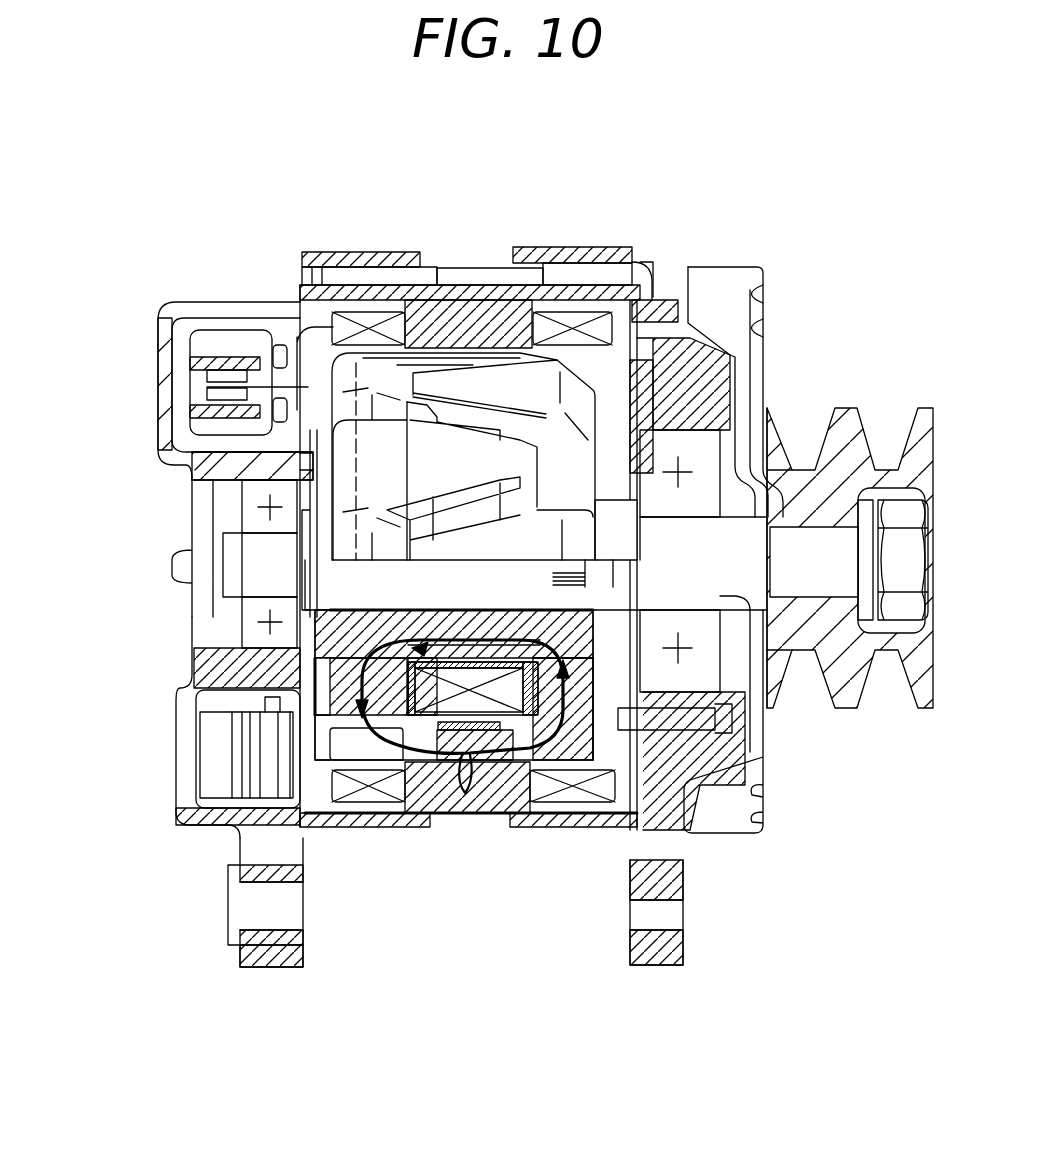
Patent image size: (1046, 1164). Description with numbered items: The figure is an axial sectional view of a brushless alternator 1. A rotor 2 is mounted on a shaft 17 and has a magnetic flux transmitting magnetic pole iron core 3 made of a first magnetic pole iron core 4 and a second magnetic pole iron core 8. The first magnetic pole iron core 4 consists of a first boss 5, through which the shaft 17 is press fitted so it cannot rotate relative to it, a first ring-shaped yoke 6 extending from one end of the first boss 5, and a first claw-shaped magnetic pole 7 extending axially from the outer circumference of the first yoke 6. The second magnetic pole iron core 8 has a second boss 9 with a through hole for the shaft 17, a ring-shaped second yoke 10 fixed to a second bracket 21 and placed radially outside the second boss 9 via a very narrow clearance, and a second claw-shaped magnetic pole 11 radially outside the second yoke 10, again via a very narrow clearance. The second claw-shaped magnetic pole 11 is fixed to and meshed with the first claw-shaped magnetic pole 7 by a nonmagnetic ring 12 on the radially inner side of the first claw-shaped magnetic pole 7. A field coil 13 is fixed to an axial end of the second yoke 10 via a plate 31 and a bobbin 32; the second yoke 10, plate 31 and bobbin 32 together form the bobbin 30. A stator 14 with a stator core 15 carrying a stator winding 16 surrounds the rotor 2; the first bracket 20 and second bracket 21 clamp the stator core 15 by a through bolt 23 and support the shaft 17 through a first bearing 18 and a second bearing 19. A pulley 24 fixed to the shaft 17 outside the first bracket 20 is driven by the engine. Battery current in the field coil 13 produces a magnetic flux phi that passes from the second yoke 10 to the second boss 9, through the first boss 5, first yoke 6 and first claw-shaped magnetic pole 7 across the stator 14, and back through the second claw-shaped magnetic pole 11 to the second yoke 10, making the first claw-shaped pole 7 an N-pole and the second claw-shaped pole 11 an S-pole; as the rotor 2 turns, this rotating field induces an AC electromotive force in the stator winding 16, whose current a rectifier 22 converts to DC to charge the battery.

The brushless alternator 1 is at (193, 190).
The rotor 2 is at (593, 363).
The magnetic flux transmitting magnetic pole iron core 3 is at (581, 960).
The first magnetic pole iron core 4 is at (608, 915).
The first boss 5 is at (540, 700).
The first ring-shaped yoke 6 is at (590, 690).
The first claw-shaped magnetic pole 7 is at (512, 730).
The second magnetic pole iron core 8 is at (446, 915).
The second boss 9 is at (395, 680).
The second yoke 10 is at (335, 725).
The second claw-shaped magnetic pole 11 is at (365, 735).
The ring 12 is at (470, 695).
The field coil 13 is at (495, 690).
The stator 14 is at (475, 166).
The stator core 15 is at (455, 305).
The stator winding 16 is at (382, 328).
The shaft 17 is at (840, 622).
The first bearing 18 is at (700, 447).
The second bearing 19 is at (245, 500).
The first bracket 20 is at (748, 352).
The second bracket 21 is at (175, 302).
The rectifier 22 is at (195, 385).
The through bolt 23 is at (500, 277).
The pulley 24 is at (873, 420).
The bobbin 30 is at (320, 660).
The plate 31 is at (440, 640).
The bobbin 32 is at (520, 635).
The magnetic flux phi is at (365, 700).